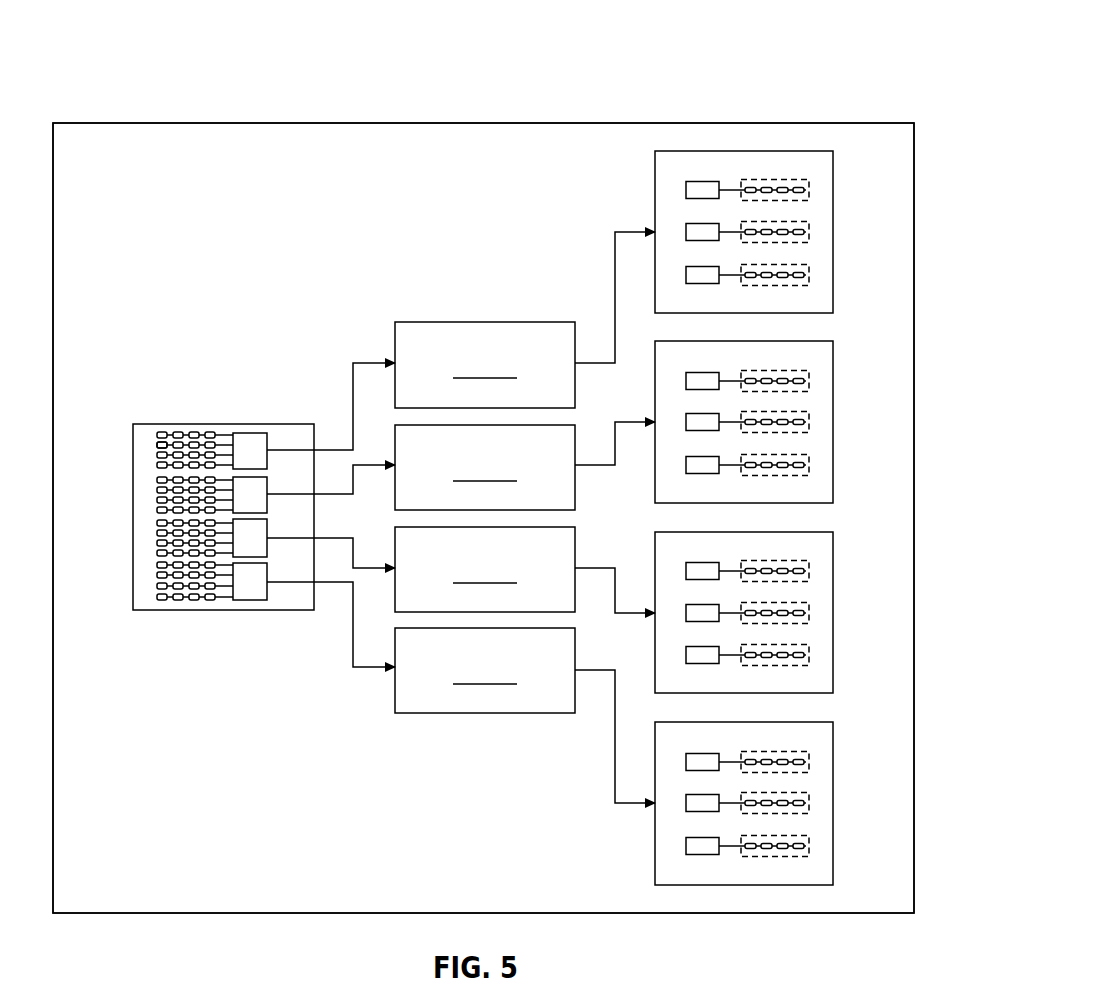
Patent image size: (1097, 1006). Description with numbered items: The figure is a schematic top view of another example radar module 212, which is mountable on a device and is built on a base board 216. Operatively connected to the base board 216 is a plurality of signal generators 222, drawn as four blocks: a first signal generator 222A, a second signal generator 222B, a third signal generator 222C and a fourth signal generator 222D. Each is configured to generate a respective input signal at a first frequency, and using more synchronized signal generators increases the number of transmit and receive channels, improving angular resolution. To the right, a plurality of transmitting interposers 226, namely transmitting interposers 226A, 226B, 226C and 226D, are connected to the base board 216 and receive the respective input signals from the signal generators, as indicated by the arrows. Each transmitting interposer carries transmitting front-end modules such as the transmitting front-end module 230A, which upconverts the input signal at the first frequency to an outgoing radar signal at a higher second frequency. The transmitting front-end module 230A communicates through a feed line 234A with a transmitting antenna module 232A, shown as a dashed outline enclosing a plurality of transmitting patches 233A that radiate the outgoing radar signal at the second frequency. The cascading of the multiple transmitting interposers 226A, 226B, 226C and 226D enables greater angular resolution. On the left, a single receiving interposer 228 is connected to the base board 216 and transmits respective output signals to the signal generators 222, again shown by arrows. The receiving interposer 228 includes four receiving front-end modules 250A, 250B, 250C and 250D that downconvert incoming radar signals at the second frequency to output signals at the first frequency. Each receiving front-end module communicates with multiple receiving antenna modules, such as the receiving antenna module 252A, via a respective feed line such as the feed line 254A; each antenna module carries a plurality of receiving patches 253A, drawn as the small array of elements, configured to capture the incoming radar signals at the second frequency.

The radar module 212 is at (203, 75).
The base board 216 is at (130, 122).
The plurality of signal generators 222 is at (485, 485).
The first signal generator 222A is at (485, 365).
The second signal generator 222B is at (485, 467).
The third signal generator 222C is at (485, 569).
The fourth signal generator 222D is at (485, 670).
The plurality of transmitting interposers 226 is at (759, 445).
The transmitting interposer 226A is at (740, 176).
The transmitting interposer 226B is at (817, 340).
The transmitting interposer 226C is at (817, 531).
The transmitting interposer 226D is at (817, 721).
The single receiving interposer 228 is at (222, 345).
The transmitting front-end module 230A is at (686, 190).
The transmitting antenna module 232A is at (810, 188).
The transmitting patches 233A is at (783, 186).
The feed line 234A is at (728, 187).
The receiving front-end module 250A is at (248, 433).
The receiving front-end module 250B is at (267, 485).
The receiving front-end module 250C is at (268, 548).
The receiving front-end module 250D is at (250, 600).
The receiving antenna module 252A is at (157, 443).
The receiving patches 253A is at (178, 432).
The feed line 254A is at (225, 433).